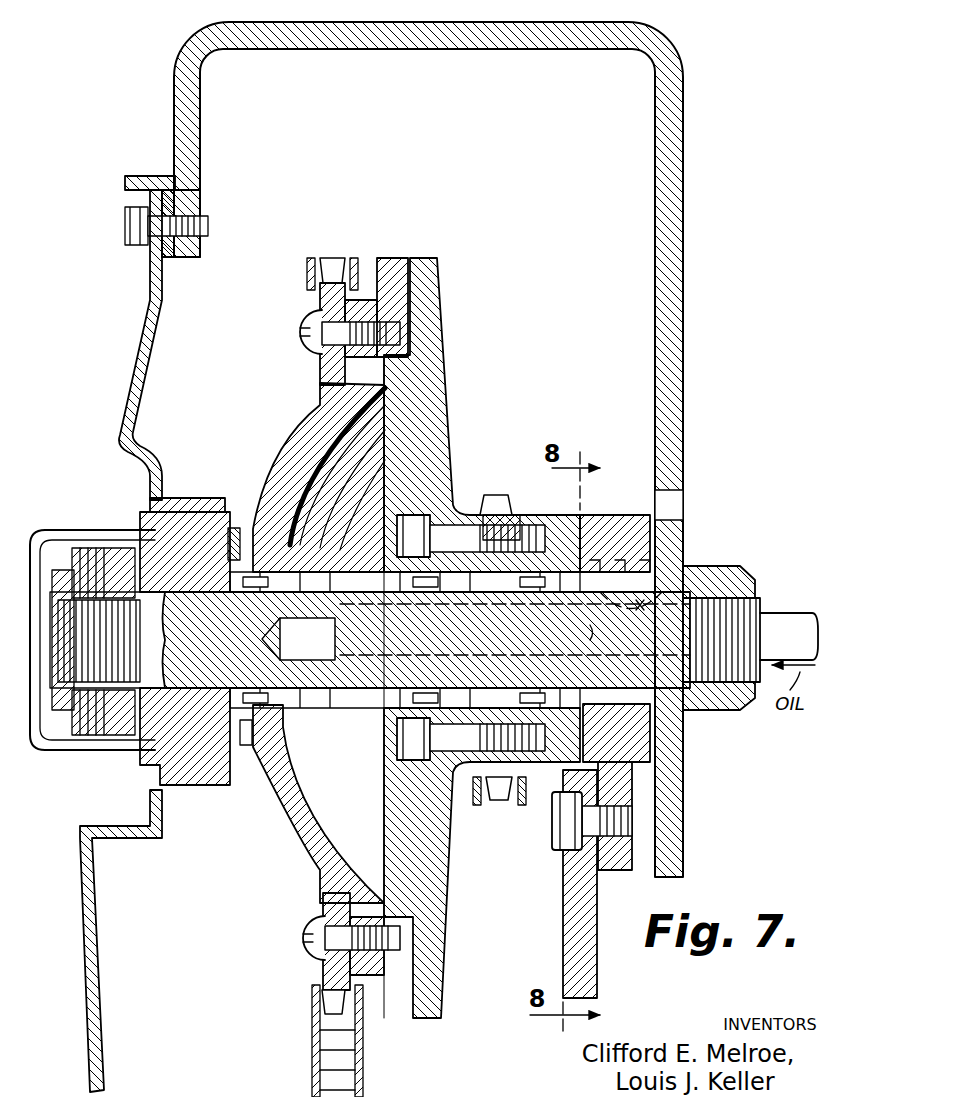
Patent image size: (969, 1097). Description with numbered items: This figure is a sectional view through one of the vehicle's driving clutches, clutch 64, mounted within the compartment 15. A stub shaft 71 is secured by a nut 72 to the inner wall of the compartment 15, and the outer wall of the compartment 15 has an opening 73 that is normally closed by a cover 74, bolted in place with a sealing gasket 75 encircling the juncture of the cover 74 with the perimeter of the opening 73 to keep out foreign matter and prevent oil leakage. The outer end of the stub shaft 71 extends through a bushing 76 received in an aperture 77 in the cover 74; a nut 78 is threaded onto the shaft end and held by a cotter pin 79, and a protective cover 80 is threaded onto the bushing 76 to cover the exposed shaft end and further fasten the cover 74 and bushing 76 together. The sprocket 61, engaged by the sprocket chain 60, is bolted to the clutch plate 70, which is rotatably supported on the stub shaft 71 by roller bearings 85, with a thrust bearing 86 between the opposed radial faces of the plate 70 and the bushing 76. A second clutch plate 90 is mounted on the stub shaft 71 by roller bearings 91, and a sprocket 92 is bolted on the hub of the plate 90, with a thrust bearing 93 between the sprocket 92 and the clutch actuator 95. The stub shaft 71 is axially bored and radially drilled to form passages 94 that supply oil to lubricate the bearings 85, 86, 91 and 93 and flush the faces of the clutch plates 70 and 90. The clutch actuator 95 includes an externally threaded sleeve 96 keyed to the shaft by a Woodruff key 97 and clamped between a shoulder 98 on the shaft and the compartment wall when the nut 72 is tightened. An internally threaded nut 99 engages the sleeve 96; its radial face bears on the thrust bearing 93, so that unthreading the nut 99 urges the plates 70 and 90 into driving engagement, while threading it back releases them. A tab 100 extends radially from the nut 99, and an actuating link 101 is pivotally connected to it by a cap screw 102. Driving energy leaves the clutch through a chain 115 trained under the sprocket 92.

The compartment 15 is at (668, 214).
The sprocket chain 60 is at (309, 258).
The sprocket 61 is at (335, 258).
The clutch 64 is at (482, 618).
The clutch plate 70 is at (388, 258).
The stub shaft 71 is at (690, 578).
The nut 72 is at (718, 706).
The opening 73 is at (188, 258).
The cover 74 is at (128, 378).
The sealing gasket 75 is at (170, 178).
The bushing 76 is at (190, 790).
The aperture 77 is at (132, 758).
The nut 78 is at (70, 745).
The cotter pin 79 is at (72, 548).
The protective cover 80 is at (108, 522).
The roller bearings 85 is at (305, 568).
The thrust bearing 86 is at (234, 528).
The second clutch plate 90 is at (437, 305).
The roller bearings 91 is at (418, 592).
The sprocket 92 is at (494, 495).
The thrust bearing 93 is at (552, 515).
The passages 94 is at (340, 620).
The clutch actuator 95 is at (665, 506).
The externally threaded sleeve 96 is at (655, 700).
The Woodruff key 97 is at (648, 604).
The shoulder 98 is at (590, 630).
The internally threaded nut 99 is at (606, 515).
The tab 100 is at (610, 870).
The actuating link 101 is at (566, 938).
The cap screw 102 is at (555, 822).
The chain 115 is at (514, 802).